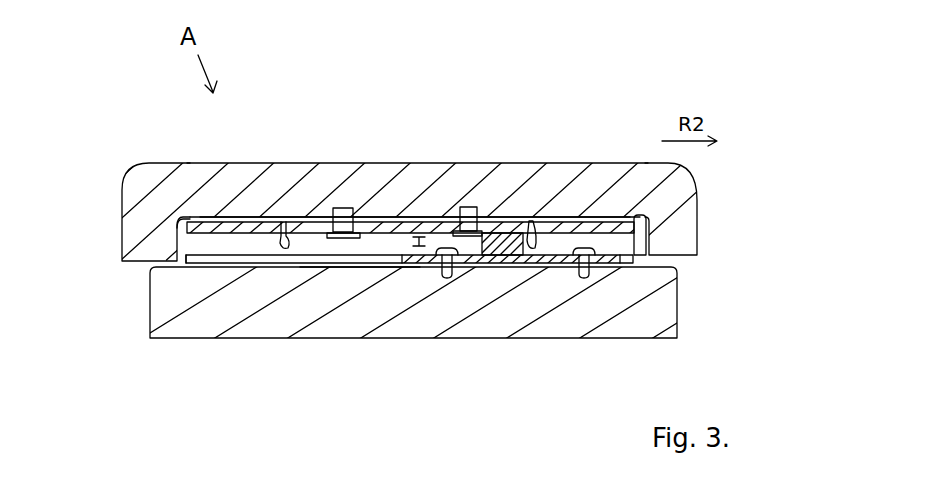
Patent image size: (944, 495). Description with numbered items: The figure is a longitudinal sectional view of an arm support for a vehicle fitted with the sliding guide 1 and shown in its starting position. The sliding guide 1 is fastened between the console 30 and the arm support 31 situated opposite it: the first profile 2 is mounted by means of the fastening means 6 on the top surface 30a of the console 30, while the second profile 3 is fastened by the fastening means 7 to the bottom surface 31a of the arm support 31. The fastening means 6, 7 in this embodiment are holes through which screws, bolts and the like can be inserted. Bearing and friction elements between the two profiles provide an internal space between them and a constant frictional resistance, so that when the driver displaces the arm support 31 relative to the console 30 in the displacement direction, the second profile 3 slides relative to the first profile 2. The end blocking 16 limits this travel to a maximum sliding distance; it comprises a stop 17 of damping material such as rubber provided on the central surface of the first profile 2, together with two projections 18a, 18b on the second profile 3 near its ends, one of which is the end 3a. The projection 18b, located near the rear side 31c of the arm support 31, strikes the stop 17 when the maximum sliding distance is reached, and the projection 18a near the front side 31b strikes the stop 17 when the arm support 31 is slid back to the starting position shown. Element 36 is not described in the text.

The sliding guide 1 is at (380, 243).
The first profile 2 is at (527, 263).
The second profile 3 is at (508, 219).
The end of the second profile 3a is at (634, 217).
The fastening means 6 is at (445, 278).
The fastening means 7 is at (338, 208).
The end blocking 16 is at (281, 222).
The stop 17 is at (500, 262).
The projection 18a is at (545, 255).
The projection 18b is at (283, 264).
The console 30 is at (378, 310).
The top surface of the console 30a is at (356, 269).
The arm support 31 is at (418, 183).
The bottom surface of the arm support 31a is at (436, 214).
The front side of the arm support 31b is at (675, 205).
The rear side of the arm support 31c is at (132, 216).
The recess 36 is at (185, 219).